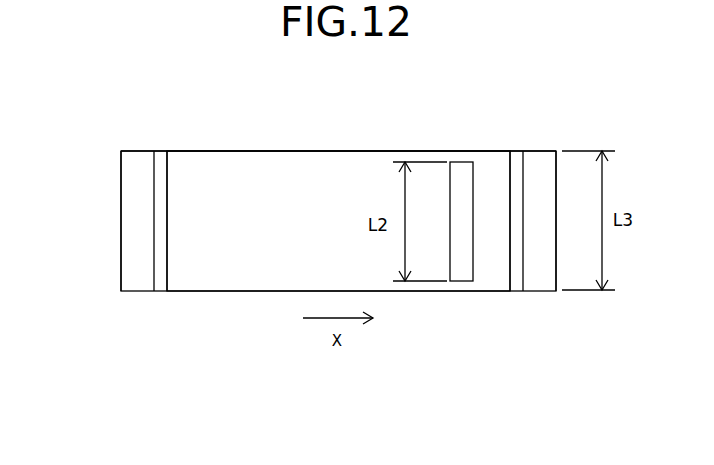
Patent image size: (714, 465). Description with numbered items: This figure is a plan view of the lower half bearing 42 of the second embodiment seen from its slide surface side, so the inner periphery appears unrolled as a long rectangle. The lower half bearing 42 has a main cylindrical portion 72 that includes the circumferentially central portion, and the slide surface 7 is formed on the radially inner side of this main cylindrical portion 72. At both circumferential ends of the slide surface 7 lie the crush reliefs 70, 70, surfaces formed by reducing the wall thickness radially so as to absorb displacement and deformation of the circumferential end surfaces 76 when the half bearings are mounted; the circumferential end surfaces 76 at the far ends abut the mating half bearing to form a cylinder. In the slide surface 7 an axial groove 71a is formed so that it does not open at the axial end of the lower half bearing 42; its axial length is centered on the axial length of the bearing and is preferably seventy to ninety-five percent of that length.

The slide surface 7 is at (300, 172).
The lower half bearing 42 is at (350, 151).
The crush relief 70 is at (163, 180).
The axial groove 71a is at (460, 176).
The main cylindrical portion 72 is at (253, 172).
The circumferential end surface 76 is at (141, 200).